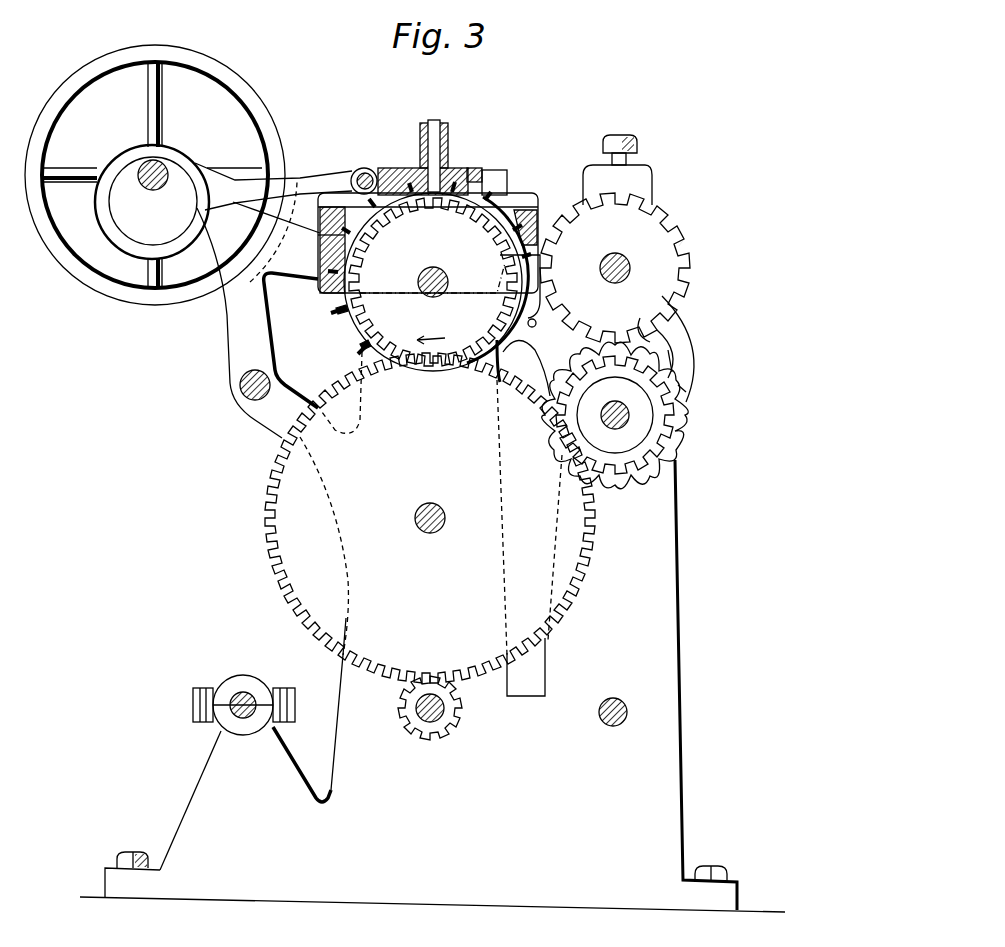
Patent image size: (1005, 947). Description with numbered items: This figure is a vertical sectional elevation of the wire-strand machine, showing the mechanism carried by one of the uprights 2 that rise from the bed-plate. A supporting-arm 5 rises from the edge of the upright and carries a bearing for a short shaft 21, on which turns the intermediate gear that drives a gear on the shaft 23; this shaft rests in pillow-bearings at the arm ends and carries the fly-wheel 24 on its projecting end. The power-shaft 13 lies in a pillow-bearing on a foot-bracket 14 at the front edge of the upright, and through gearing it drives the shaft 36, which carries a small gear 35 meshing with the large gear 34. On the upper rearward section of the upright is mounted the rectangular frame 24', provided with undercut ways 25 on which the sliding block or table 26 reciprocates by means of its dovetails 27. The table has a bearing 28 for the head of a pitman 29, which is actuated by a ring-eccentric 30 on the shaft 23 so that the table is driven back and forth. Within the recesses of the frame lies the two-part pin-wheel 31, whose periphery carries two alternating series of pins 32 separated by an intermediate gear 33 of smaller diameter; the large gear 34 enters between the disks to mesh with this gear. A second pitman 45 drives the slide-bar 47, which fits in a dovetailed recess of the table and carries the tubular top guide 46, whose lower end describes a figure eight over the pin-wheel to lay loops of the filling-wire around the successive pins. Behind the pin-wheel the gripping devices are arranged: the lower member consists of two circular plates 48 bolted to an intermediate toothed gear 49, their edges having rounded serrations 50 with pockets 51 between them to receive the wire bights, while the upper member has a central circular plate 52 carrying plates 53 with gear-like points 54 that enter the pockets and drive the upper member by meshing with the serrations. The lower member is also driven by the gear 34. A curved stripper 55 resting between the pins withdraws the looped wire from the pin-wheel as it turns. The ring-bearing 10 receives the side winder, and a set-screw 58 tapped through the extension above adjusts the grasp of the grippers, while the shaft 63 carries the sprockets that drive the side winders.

The uprights 2 is at (432, 538).
The supporting-arm 5 is at (279, 323).
The bearing 10 is at (690, 326).
The power-shaft 13 is at (246, 692).
The foot-bracket 14 is at (207, 800).
The short shaft 21 is at (250, 398).
The shaft 23 is at (163, 167).
The fly-wheel 24 is at (164, 175).
The rectangular frame 24' is at (426, 217).
The ways 25 is at (512, 202).
The sliding block or table 26 is at (396, 168).
The dovetails 27 is at (500, 195).
The bearing 28 is at (362, 173).
The pitman 29 is at (300, 182).
The ring-eccentric 30 is at (152, 202).
The pin-wheel 31 is at (360, 338).
The pins 32 is at (338, 312).
The intermediate gear 33 is at (433, 282).
The gear 34 is at (430, 518).
The small gear 35 is at (458, 722).
The shaft 36 is at (414, 720).
The pitman 45 is at (450, 150).
The top guide 46 is at (438, 122).
The slide-bar 47 is at (458, 172).
The plates 48 is at (684, 398).
The intermediate toothed disk or gear 49 is at (615, 415).
The rounded serrations 50 is at (681, 386).
The pockets or spaces 51 is at (670, 366).
The central circular plate 52 is at (615, 268).
The metallic plates 53 is at (672, 236).
The points 54 is at (640, 318).
The stripper 55 is at (548, 262).
The set-screw 58 is at (636, 146).
The shaft 63 is at (622, 722).